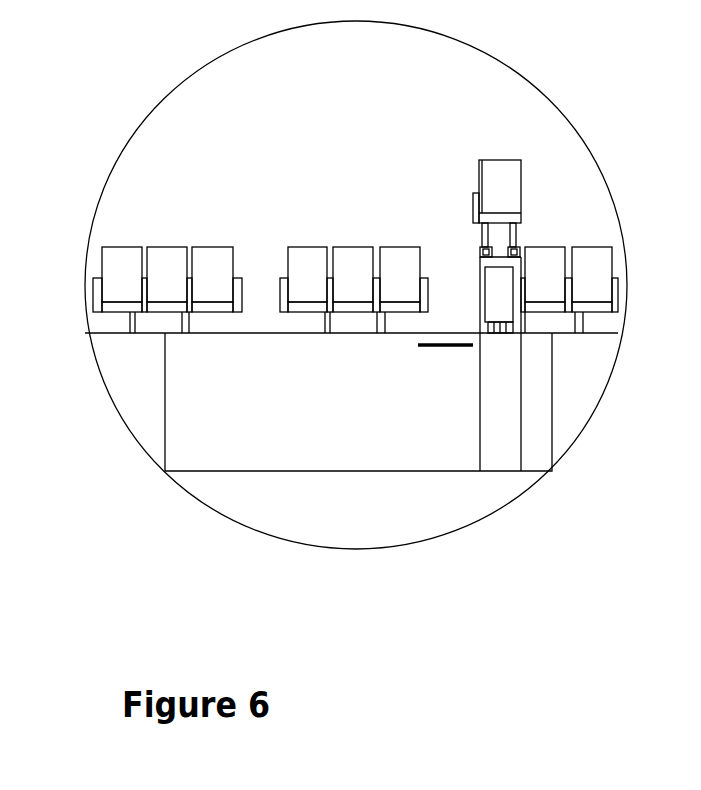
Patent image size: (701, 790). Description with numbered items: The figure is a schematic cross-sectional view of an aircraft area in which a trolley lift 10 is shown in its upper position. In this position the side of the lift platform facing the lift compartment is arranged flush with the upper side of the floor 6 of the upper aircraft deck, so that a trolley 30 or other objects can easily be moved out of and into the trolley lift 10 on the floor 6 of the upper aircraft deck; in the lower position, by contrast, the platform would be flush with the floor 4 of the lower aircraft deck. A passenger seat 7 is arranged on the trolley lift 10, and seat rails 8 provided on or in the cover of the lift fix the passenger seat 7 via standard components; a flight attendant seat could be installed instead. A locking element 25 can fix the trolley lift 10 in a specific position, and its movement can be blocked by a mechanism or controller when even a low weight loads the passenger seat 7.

The floor of the lower aircraft deck 4 is at (213, 473).
The floor of the upper aircraft deck 6 is at (97, 333).
The passenger seat 7 is at (502, 175).
The seat rails 8 is at (518, 247).
The trolley lift 10 is at (463, 254).
The locking element 25 is at (420, 348).
The trolley 30 is at (503, 310).